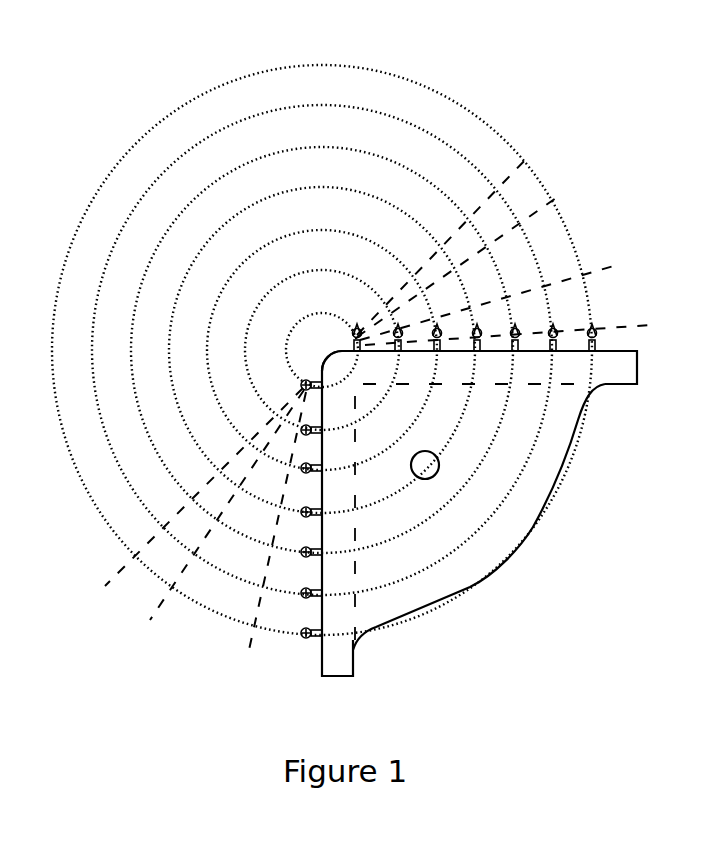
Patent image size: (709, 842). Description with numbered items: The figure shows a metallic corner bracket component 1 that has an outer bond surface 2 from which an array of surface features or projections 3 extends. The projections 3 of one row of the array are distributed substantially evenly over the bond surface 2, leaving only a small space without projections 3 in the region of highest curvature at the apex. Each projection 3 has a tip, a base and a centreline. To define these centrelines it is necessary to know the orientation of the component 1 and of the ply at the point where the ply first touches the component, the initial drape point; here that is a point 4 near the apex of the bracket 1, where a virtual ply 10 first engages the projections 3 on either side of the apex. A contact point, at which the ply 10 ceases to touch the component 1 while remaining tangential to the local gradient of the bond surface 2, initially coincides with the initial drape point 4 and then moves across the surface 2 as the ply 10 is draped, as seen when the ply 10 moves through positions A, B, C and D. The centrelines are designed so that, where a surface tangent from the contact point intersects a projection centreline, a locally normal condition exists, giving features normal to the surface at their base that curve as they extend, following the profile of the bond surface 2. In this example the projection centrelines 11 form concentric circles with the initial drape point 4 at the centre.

The corner bracket component 1 is at (448, 586).
The outer bond surface 2 is at (624, 352).
The projections 3 is at (359, 326).
The initial drape point 4 is at (322, 350).
The virtual ply 10 is at (246, 648).
The projection centrelines 11 is at (318, 224).
The ply position A is at (538, 151).
The ply position B is at (566, 198).
The ply position C is at (600, 264).
The ply position D is at (626, 320).